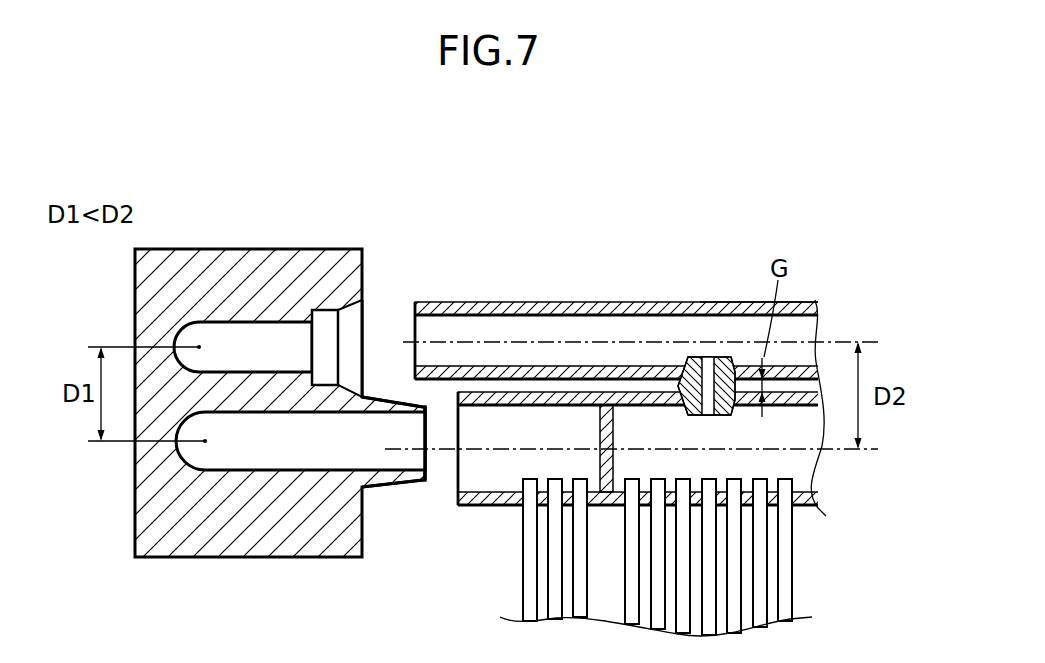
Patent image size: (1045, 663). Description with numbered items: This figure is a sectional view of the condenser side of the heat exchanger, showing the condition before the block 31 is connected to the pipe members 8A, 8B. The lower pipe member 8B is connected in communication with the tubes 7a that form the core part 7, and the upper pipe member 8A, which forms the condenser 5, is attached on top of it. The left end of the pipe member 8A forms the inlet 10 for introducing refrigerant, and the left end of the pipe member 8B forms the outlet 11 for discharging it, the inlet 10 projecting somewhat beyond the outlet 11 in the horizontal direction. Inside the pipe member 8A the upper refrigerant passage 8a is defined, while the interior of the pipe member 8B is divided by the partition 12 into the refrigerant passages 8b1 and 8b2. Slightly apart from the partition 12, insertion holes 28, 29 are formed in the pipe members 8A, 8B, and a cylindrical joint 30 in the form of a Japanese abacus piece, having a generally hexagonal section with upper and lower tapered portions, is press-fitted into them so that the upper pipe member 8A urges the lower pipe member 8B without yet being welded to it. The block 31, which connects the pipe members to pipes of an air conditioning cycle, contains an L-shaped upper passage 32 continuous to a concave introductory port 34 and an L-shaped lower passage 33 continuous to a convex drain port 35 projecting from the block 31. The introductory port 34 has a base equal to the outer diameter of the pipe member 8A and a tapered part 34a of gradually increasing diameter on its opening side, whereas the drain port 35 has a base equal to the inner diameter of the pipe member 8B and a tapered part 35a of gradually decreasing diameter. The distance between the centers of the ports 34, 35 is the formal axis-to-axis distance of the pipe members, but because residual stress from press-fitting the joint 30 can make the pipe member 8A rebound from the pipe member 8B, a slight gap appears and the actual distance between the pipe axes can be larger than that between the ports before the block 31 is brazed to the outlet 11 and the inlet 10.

The condenser 5 is at (842, 489).
The core part 7 is at (812, 570).
The tube 7a is at (547, 586).
The pipe member 8A is at (617, 298).
The pipe member 8B is at (673, 398).
The upper refrigerant passage 8a is at (806, 302).
The refrigerant passage 8b1 is at (793, 463).
The refrigerant passage 8b2 is at (525, 420).
The inlet 10 is at (416, 303).
The outlet 11 is at (457, 498).
The partition 12 is at (600, 447).
The insertion hole 28 is at (689, 356).
The insertion hole 29 is at (690, 415).
The cylindrical joint 30 is at (713, 357).
The block 31 is at (134, 493).
The upper passage 32 is at (222, 322).
The lower passage 33 is at (230, 471).
The introductory port 34 is at (323, 348).
The tapered part 34a is at (363, 300).
The drain port 35 is at (364, 488).
The tapered part 35a is at (410, 402).